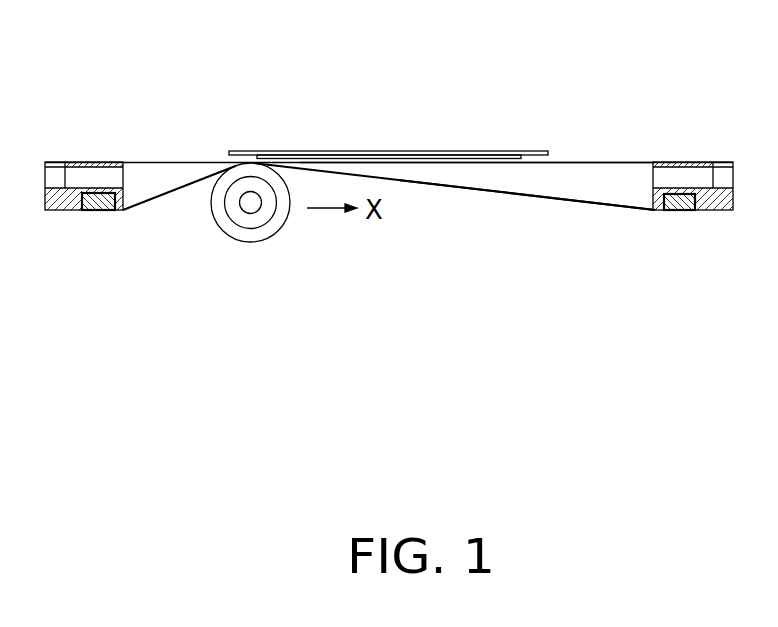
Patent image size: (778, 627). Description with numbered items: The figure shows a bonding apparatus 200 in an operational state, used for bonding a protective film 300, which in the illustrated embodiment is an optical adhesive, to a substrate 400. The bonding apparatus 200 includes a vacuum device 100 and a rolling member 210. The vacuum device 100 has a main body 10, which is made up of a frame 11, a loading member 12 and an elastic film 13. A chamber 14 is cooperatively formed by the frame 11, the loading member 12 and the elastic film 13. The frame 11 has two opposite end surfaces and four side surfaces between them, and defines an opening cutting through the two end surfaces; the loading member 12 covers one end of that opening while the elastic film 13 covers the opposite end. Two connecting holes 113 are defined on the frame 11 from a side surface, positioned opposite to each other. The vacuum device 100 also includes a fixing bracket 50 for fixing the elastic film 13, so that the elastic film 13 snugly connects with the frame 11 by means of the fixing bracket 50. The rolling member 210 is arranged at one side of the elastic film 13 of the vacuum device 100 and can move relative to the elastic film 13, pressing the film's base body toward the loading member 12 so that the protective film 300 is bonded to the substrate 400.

The vacuum device 100 is at (146, 153).
The main body 10 is at (390, 212).
The frame 11 is at (708, 200).
The loading member 12 is at (555, 164).
The elastic film 13 is at (527, 235).
The chamber 14 is at (623, 190).
The connecting hole 113 is at (683, 177).
The fixing bracket 50 is at (102, 202).
The bonding apparatus 200 is at (206, 137).
The rolling member 210 is at (248, 172).
The protective film 300 is at (402, 160).
The substrate 400 is at (513, 153).